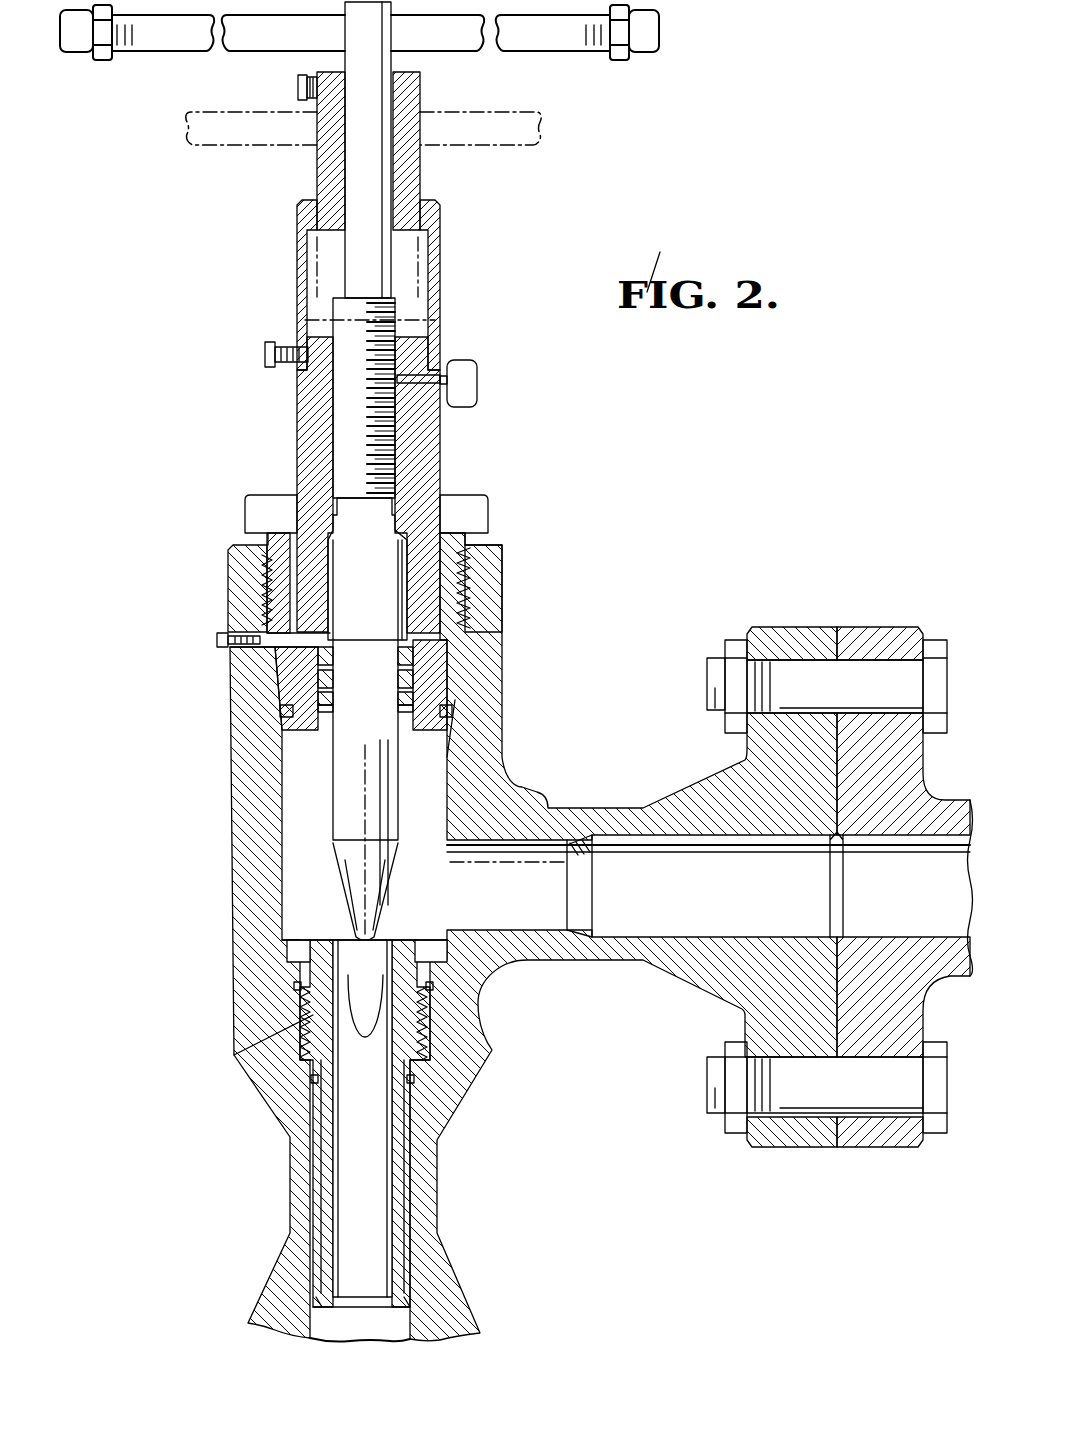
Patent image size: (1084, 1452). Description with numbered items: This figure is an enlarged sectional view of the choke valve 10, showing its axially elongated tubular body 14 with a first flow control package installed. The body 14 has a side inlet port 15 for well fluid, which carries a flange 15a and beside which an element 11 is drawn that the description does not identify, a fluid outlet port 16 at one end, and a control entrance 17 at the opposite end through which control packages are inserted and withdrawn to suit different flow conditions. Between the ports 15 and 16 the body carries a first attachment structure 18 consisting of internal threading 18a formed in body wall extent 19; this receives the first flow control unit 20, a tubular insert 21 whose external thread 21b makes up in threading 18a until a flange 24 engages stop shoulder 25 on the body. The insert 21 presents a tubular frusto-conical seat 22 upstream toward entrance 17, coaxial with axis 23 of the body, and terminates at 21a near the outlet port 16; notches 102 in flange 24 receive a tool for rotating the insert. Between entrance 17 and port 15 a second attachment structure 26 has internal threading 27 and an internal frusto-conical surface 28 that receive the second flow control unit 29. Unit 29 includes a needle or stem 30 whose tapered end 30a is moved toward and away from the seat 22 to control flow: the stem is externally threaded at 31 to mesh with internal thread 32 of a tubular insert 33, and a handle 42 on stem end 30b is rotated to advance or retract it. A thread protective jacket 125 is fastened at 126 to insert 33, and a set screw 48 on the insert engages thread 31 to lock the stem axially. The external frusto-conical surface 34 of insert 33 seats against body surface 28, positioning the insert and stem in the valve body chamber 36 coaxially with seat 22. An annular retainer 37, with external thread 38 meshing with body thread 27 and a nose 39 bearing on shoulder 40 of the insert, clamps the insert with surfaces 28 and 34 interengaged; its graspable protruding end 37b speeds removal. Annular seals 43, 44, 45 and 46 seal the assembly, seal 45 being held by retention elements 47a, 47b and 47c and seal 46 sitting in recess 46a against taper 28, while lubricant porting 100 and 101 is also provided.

The valve 10 is at (188, 771).
The flange connection 11 is at (803, 592).
The tubular body 14 is at (245, 832).
The side inlet port 15 is at (496, 888).
The flange 15a is at (770, 1030).
The fluid outlet port 16 is at (350, 1330).
The control entrance 17 is at (486, 585).
The first attachment structure 18 is at (295, 1085).
The internal threading 18a is at (297, 1015).
The body wall extent 19 is at (232, 1052).
The first flow control unit 20 is at (425, 1037).
The tubular insert 21 is at (425, 1085).
The insert end 21a is at (405, 1240).
The external thread 21b is at (435, 1045).
The frusto-conical seat 22 is at (340, 918).
The axis 23 is at (362, 797).
The flange 24 is at (300, 964).
The stop shoulder 25 is at (480, 986).
The second attachment structure 26 is at (482, 626).
The internal threading 27 is at (472, 600).
The internal frusto-conical surface 28 is at (455, 684).
The second flow control unit 29 is at (272, 680).
The stem 30 is at (388, 772).
The tapered end 30a is at (355, 886).
The stem end 30b is at (392, 60).
The external thread 31 is at (396, 430).
The internal thread 32 is at (345, 440).
The tubular insert 33 is at (430, 470).
The external frusto-conical surface 34 is at (285, 702).
The valve body chamber 36 is at (415, 800).
The annular retainer 37 is at (222, 517).
The graspable protruding end 37b is at (490, 515).
The external thread 38 is at (262, 585).
The nose 39 is at (450, 655).
The shoulder 40 is at (412, 640).
The handle 42 is at (158, 70).
The annular seal 43 is at (310, 1100).
The annular seal 44 is at (300, 990).
The annular seal 45 is at (452, 714).
The annular seal 46 is at (447, 735).
The recess 46a is at (284, 718).
The retention element 47a is at (398, 703).
The retention element 47b is at (398, 675).
The retention element 47c is at (412, 646).
The set screw 48 is at (458, 360).
The lubricant porting 100 is at (258, 620).
The lubricant porting 101 is at (273, 672).
The notches 102 is at (290, 952).
The thread protective jacket 125 is at (440, 258).
The fastener 126 is at (272, 340).